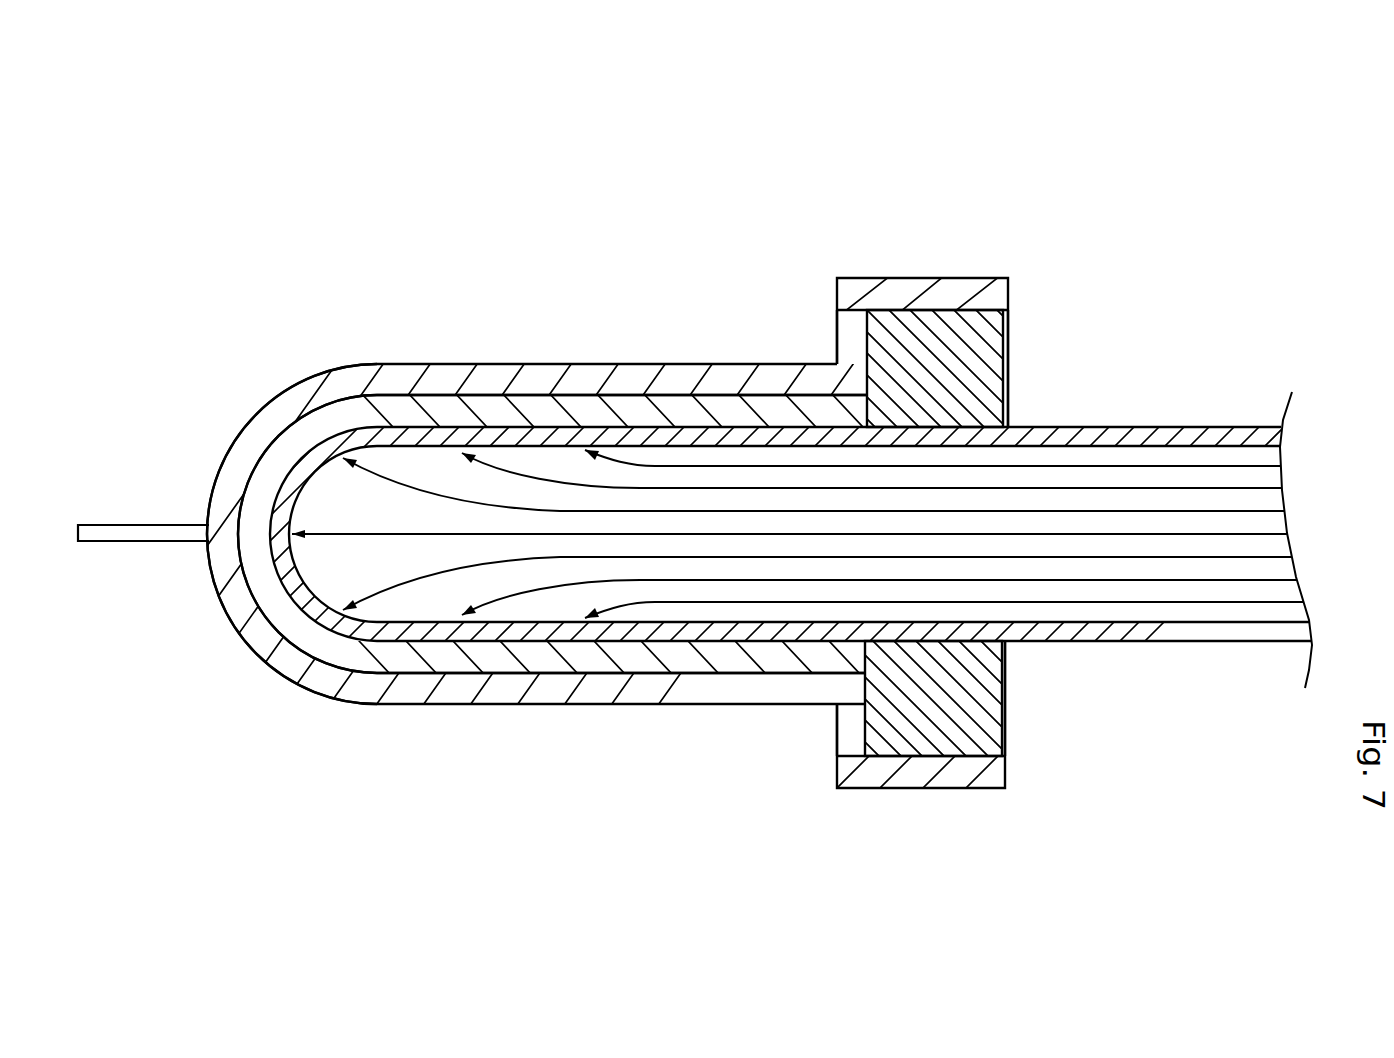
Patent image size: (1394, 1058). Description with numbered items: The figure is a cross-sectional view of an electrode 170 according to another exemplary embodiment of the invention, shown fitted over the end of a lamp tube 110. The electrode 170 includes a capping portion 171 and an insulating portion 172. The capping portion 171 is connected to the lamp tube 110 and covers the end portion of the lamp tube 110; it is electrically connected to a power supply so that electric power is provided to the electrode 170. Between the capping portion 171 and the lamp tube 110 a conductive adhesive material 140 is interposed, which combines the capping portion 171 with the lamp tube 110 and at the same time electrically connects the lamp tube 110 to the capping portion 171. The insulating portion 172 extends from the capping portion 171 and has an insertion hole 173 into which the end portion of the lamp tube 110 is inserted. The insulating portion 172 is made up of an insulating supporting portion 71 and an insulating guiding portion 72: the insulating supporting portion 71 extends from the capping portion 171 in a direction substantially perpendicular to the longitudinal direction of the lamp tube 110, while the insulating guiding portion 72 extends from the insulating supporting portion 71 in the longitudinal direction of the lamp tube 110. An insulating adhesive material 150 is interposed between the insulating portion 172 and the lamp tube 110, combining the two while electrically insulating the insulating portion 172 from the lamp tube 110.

The lamp tube 110 is at (1143, 427).
The conductive adhesive material 140 is at (563, 650).
The insulating adhesive material 150 is at (1003, 378).
The electrode 170 is at (283, 392).
The capping portion 171 is at (565, 393).
The insulating portion 172 is at (945, 130).
The insulating supporting portion 71 is at (850, 323).
The insulating guiding portion 72 is at (908, 295).
The insertion hole 173 is at (980, 313).